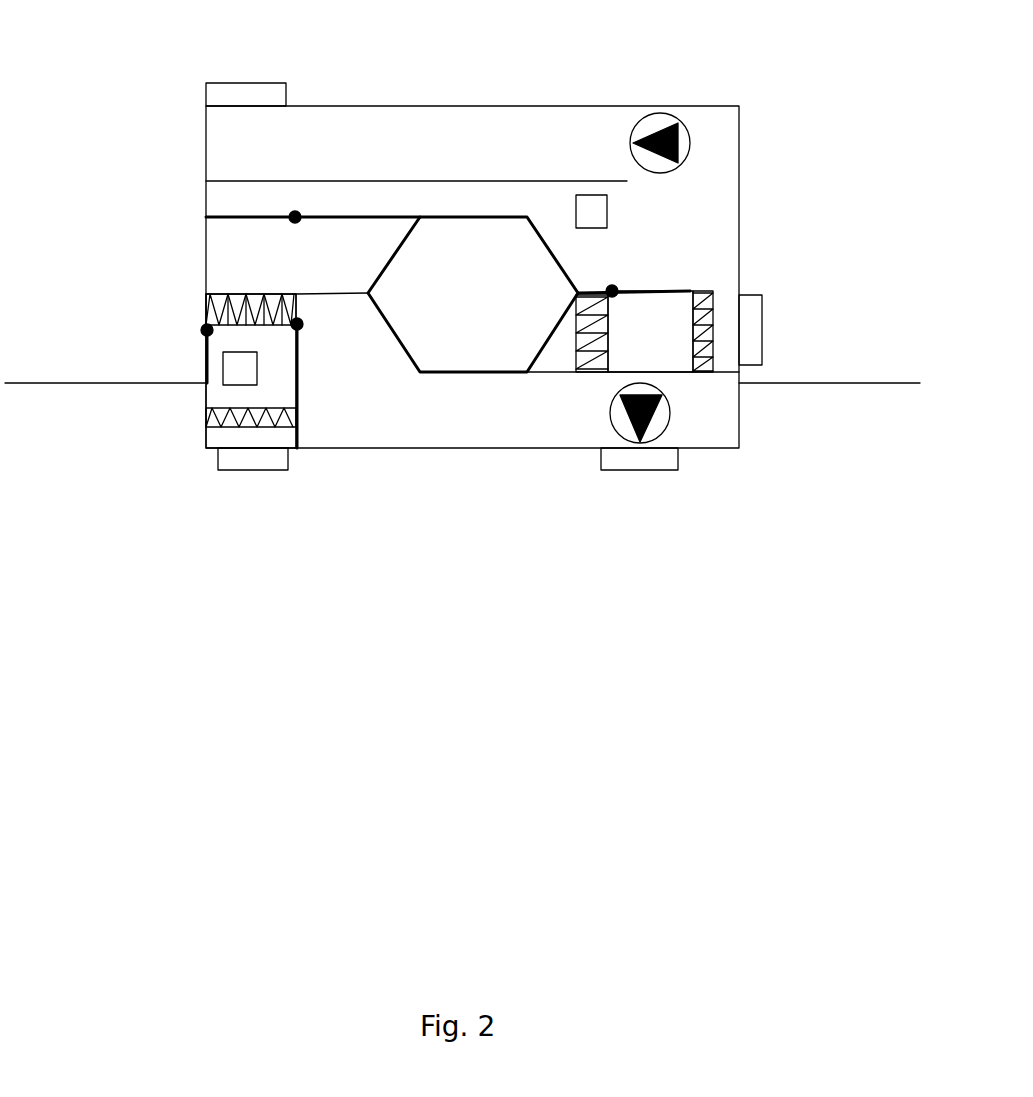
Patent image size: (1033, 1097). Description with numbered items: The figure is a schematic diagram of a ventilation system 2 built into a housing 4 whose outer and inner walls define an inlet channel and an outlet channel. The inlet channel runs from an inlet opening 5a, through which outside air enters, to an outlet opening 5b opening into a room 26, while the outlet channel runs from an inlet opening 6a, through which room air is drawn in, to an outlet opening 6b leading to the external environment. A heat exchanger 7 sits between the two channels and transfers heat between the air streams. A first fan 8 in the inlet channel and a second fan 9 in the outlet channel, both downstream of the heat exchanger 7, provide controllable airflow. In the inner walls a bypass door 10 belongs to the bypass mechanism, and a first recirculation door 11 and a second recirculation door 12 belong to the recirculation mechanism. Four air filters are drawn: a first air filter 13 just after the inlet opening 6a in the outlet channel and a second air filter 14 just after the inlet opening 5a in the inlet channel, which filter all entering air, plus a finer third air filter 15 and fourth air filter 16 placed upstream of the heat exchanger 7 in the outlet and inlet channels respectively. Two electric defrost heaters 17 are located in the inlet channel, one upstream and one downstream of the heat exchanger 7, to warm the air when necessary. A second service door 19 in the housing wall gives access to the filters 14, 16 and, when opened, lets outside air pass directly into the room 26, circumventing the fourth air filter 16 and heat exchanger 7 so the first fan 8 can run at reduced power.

The ventilation system 2 is at (165, 151).
The housing 4 is at (557, 106).
The inlet opening of the inlet channel 5a is at (248, 93).
The outlet opening of the inlet channel 5b is at (232, 460).
The inlet opening of the outlet channel 6a is at (755, 310).
The outlet opening of the outlet channel 6b is at (610, 455).
The heat exchanger 7 is at (455, 372).
The first fan 8 is at (678, 123).
The second fan 9 is at (650, 420).
The bypass door 10 is at (250, 222).
The first recirculation door 11 is at (660, 290).
The second recirculation door 12 is at (297, 383).
The first air filter 13 is at (700, 292).
The second air filter 14 is at (206, 425).
The third air filter 15 is at (612, 290).
The fourth air filter 16 is at (206, 312).
The electric defrost heater 17 is at (575, 212).
The second service door 19 is at (207, 336).
The room 26 is at (55, 365).